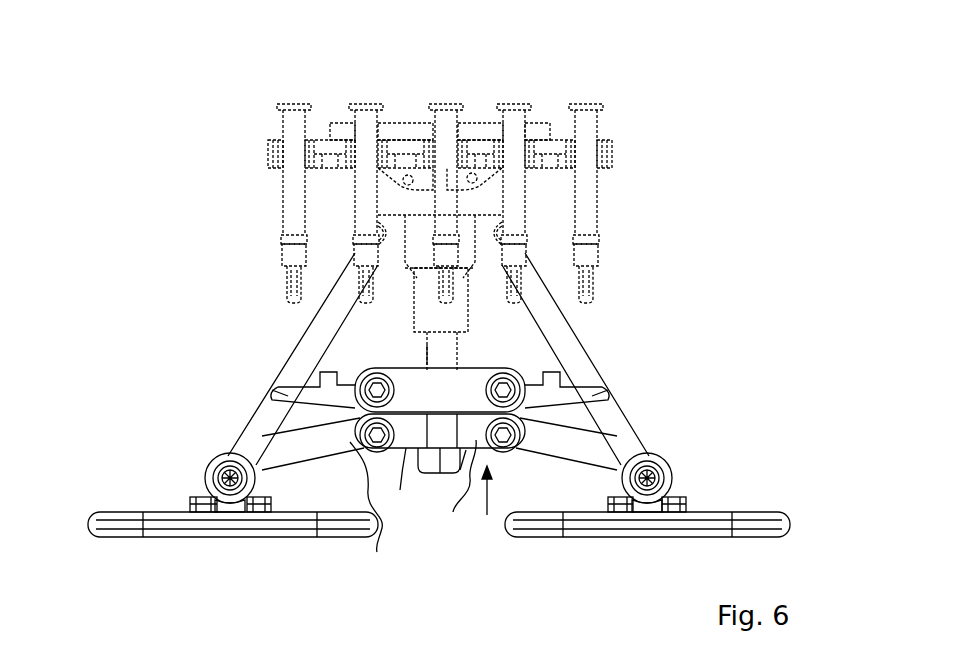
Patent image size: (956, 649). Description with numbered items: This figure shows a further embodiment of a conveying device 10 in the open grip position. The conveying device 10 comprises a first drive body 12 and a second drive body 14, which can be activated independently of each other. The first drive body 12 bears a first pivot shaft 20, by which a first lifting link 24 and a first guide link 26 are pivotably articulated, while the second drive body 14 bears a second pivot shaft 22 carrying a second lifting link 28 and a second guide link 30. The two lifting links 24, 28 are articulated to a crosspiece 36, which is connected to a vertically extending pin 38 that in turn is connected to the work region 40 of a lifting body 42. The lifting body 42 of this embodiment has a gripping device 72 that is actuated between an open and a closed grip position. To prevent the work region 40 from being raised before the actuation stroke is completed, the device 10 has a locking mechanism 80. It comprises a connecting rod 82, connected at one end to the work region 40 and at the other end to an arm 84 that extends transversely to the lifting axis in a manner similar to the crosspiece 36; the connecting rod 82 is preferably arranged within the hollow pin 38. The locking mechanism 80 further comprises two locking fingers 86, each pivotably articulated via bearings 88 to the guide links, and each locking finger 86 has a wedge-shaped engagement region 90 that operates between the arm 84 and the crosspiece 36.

The conveying device 10 is at (703, 68).
The first drive body 12 is at (280, 532).
The second drive body 14 is at (645, 537).
The first pivot shaft 20 is at (230, 476).
The second pivot shaft 22 is at (649, 476).
The first lifting link 24 is at (307, 438).
The first guide link 26 is at (580, 440).
The second lifting link 28 is at (303, 349).
The second guide link 30 is at (577, 349).
The crosspiece 36 is at (475, 383).
The pin 38 is at (437, 354).
The work region 40 is at (480, 127).
The lifting body 42 is at (632, 135).
The gripping device 72 is at (558, 163).
The locking mechanism 80 is at (480, 505).
The connecting rod 82 is at (412, 448).
The arm 84 is at (473, 447).
The locking fingers 86 is at (338, 370).
The bearings 88 is at (270, 395).
The wedge-shaped engagement region 90 is at (438, 518).